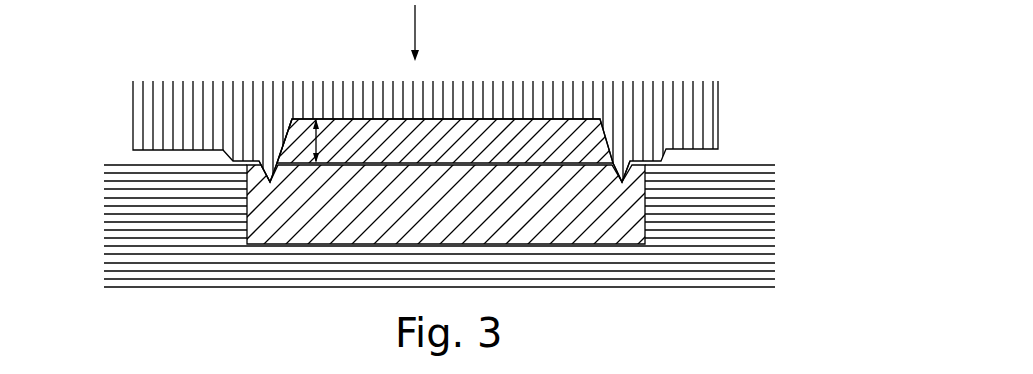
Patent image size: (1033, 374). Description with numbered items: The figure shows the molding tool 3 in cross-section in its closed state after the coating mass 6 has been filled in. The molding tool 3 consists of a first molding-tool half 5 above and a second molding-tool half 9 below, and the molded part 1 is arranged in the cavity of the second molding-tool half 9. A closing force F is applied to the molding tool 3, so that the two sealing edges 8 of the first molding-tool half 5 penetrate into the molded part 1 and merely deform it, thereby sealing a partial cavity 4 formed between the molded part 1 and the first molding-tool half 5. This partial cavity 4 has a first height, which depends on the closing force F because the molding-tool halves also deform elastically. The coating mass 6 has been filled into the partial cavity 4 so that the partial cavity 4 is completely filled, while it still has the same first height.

The molded part 1 is at (293, 219).
The molding tool 3 is at (88, 105).
The partial cavity 4 is at (297, 120).
The first molding-tool half 5 is at (704, 97).
The coating mass 6 is at (508, 118).
The sealing edges 8 is at (273, 183).
The second molding-tool half 9 is at (765, 217).